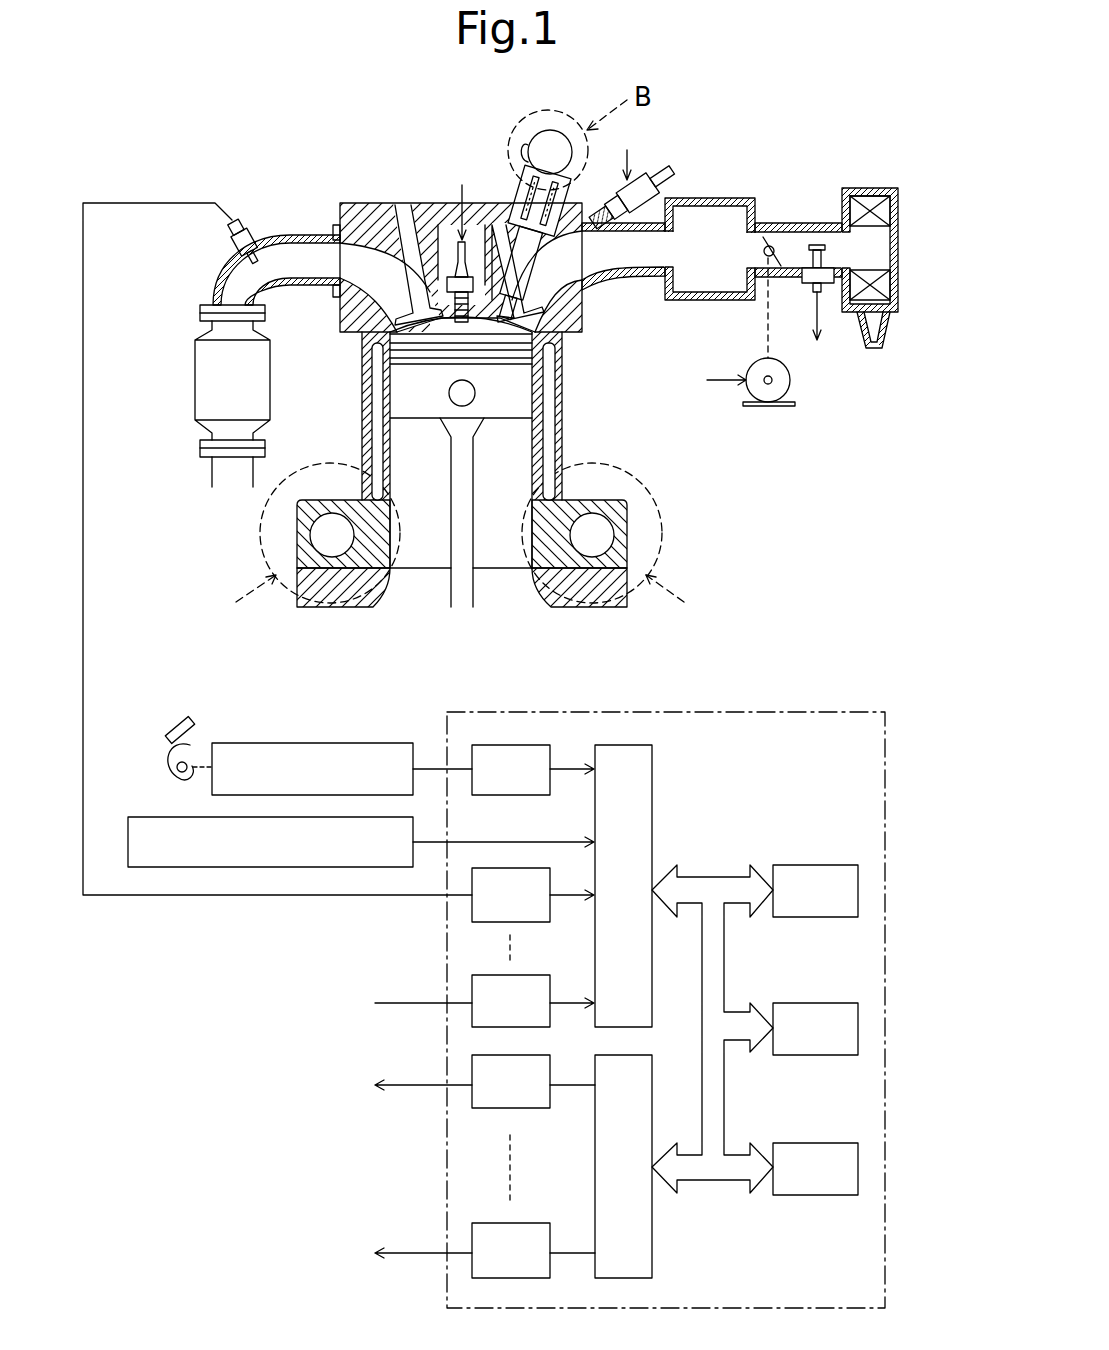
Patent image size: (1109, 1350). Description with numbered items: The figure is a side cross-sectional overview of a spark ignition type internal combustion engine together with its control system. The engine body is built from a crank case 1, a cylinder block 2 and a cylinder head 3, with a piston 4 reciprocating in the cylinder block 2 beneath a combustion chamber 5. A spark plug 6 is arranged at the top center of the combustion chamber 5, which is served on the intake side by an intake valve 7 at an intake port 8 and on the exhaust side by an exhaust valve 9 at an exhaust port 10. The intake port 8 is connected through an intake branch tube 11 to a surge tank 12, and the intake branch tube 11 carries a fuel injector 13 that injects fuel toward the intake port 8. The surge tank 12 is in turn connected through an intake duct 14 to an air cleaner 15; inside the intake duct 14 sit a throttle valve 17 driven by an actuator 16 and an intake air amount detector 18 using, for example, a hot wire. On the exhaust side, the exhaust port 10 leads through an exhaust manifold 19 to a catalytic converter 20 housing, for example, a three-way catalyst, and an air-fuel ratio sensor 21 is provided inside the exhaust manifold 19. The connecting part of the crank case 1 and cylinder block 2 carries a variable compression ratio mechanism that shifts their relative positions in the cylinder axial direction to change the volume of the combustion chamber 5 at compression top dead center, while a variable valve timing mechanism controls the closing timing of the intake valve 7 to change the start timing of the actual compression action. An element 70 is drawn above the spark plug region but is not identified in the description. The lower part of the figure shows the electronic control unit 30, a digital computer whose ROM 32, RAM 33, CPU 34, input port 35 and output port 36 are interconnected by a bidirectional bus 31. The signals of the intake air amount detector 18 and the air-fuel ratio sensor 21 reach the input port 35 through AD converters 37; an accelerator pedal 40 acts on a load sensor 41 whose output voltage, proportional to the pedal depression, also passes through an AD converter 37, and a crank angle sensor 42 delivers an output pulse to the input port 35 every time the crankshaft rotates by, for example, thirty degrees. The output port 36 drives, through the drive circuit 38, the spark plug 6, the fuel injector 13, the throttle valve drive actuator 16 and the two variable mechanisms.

The crank case 1 is at (593, 608).
The cylinder block 2 is at (558, 433).
The cylinder head 3 is at (562, 317).
The piston 4 is at (407, 390).
The combustion chamber 5 is at (447, 327).
The spark plug 6 is at (458, 262).
The intake valve 7 is at (505, 327).
The intake port 8 is at (545, 273).
The exhaust valve 9 is at (367, 357).
The exhaust port 10 is at (390, 290).
The intake branch tube 11 is at (647, 222).
The surge tank 12 is at (730, 200).
The fuel injector 13 is at (632, 192).
The intake duct 14 is at (800, 222).
The air cleaner 15 is at (873, 190).
The actuator 16 is at (755, 387).
The throttle valve 17 is at (774, 258).
The intake air amount detector 18 is at (830, 260).
The exhaust manifold 19 is at (289, 235).
The catalytic converter 20 is at (205, 375).
The air-fuel ratio sensor 21 is at (228, 250).
The electronic control unit 30 is at (835, 712).
The bidirectional bus 31 is at (716, 877).
The ROM 32 is at (815, 865).
The RAM 33 is at (818, 1003).
The CPU 34 is at (819, 1143).
The input port 35 is at (652, 770).
The output port 36 is at (652, 1240).
The AD converter 37 is at (528, 745).
The drive circuit 38 is at (472, 1235).
The accelerator pedal 40 is at (190, 723).
The load sensor 41 is at (313, 743).
The crank angle sensor 42 is at (150, 817).
The spark plug terminal 70 is at (548, 145).